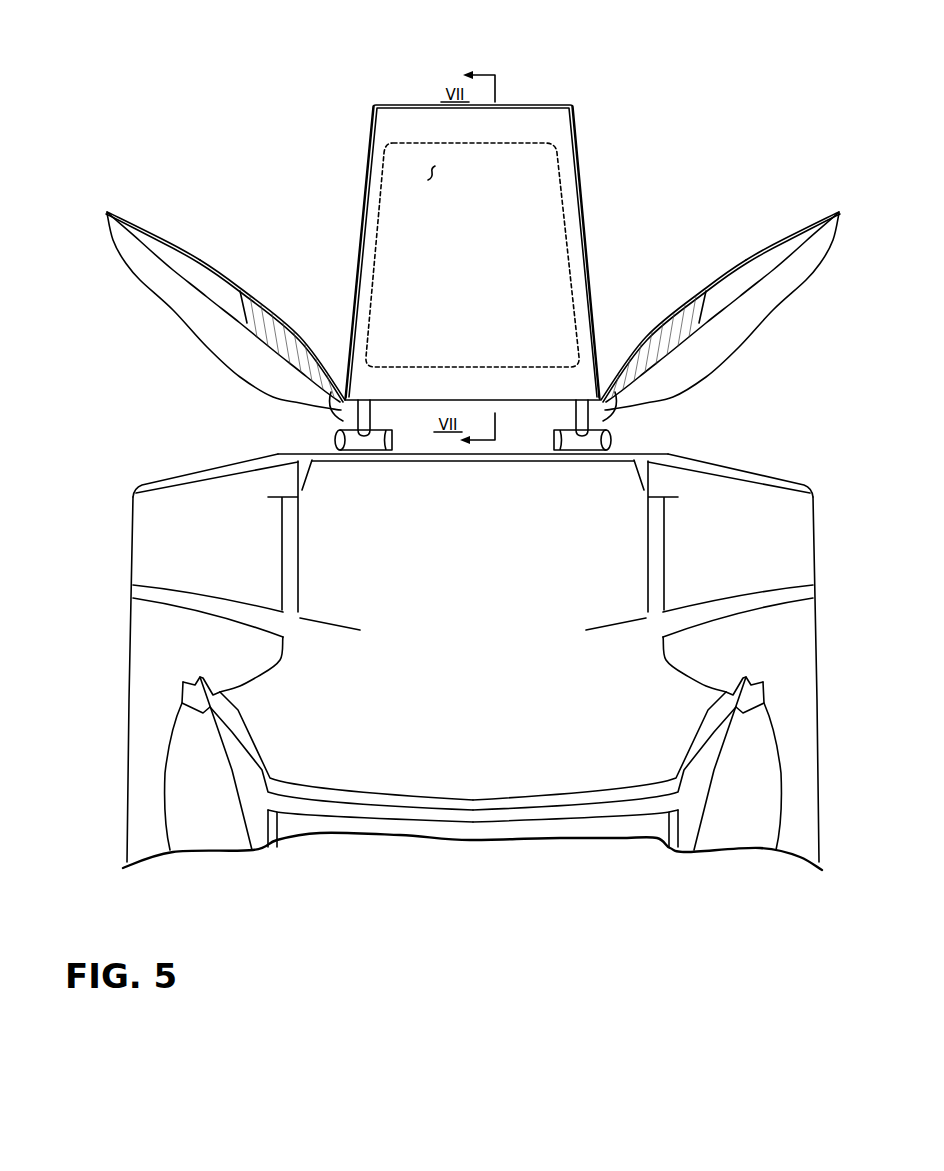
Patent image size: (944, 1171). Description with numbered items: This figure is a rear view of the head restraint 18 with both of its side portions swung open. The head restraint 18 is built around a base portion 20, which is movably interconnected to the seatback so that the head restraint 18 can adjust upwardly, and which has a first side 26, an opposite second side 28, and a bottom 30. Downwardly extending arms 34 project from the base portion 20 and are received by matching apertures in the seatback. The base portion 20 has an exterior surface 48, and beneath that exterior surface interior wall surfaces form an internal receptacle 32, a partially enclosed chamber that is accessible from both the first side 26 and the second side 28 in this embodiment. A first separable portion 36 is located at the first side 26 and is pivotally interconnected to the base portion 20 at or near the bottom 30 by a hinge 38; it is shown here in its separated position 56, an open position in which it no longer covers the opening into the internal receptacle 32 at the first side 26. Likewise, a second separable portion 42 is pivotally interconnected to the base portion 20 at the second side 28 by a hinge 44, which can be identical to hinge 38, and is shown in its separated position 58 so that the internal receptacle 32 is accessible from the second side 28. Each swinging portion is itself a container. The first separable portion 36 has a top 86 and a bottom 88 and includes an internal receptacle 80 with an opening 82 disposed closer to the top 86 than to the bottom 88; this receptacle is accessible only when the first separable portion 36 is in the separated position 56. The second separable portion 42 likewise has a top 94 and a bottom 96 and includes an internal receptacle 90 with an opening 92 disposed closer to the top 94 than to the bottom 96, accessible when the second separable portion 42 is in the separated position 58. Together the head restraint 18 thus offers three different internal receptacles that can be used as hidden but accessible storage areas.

The head restraint 18 is at (412, 100).
The base portion 20 is at (516, 128).
The first side 26 is at (362, 203).
The second side 28 is at (592, 227).
The internal receptacle 32 is at (518, 193).
The exterior surface 48 is at (428, 180).
The first separable portion 36 is at (195, 279).
The second separable portion 42 is at (727, 277).
The separated position 56 is at (186, 330).
The separated position 58 is at (784, 314).
The internal receptacle 80 is at (250, 323).
The opening 82 is at (226, 291).
The top 86 is at (110, 210).
The bottom 88 is at (345, 403).
The internal receptacle 90 is at (725, 282).
The opening 92 is at (739, 265).
The top 94 is at (838, 208).
The bottom 30 is at (523, 446).
The downwardly extending arms 34 is at (363, 417).
The hinge 38 is at (336, 431).
The hinge 44 is at (603, 402).
The bottom 96 is at (567, 438).